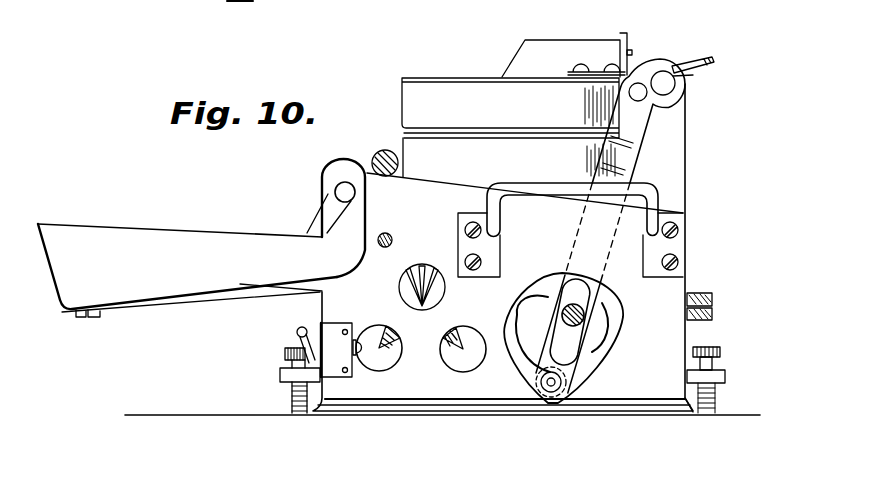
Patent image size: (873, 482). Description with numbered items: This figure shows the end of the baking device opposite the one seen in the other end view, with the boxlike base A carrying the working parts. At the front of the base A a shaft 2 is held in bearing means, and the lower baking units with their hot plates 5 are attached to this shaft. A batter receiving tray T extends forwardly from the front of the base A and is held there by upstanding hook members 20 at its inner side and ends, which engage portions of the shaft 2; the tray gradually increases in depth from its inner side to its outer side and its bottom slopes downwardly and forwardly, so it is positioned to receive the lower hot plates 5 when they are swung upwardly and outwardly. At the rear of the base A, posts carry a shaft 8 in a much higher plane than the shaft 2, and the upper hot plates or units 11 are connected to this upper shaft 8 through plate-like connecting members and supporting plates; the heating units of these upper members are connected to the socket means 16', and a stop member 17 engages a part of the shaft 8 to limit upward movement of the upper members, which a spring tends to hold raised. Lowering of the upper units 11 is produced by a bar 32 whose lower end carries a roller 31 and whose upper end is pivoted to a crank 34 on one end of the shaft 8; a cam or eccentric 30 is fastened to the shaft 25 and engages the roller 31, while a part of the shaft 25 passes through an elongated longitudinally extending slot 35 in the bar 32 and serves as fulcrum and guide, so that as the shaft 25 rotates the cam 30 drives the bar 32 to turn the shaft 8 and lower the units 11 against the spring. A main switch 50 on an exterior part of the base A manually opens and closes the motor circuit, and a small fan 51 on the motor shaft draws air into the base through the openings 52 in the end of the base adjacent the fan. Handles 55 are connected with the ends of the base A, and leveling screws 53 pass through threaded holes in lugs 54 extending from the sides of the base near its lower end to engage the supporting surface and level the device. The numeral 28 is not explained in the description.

The batter receiving tray T is at (158, 296).
The tray rail 28 is at (248, 290).
The upstanding hook members 20 is at (345, 230).
The shaft 2 is at (345, 187).
The hot plates 5 is at (503, 248).
The upper hot plates or units 11 is at (458, 90).
The socket means 16' is at (567, 43).
The bar 32 is at (627, 147).
The crank 34 is at (660, 103).
The shaft 8 is at (663, 78).
The stop member 17 is at (707, 63).
The handles 55 is at (542, 183).
The cam or eccentric 30 is at (525, 310).
The elongated longitudinally extending slot 35 is at (565, 347).
The shaft 25 is at (583, 315).
The roller 31 is at (565, 385).
The small fan 51 is at (444, 330).
The openings 52 is at (399, 349).
The main switch 50 is at (328, 343).
The lugs 54 is at (282, 376).
The leveling screws 53 is at (292, 393).
The boxlike base A is at (678, 290).